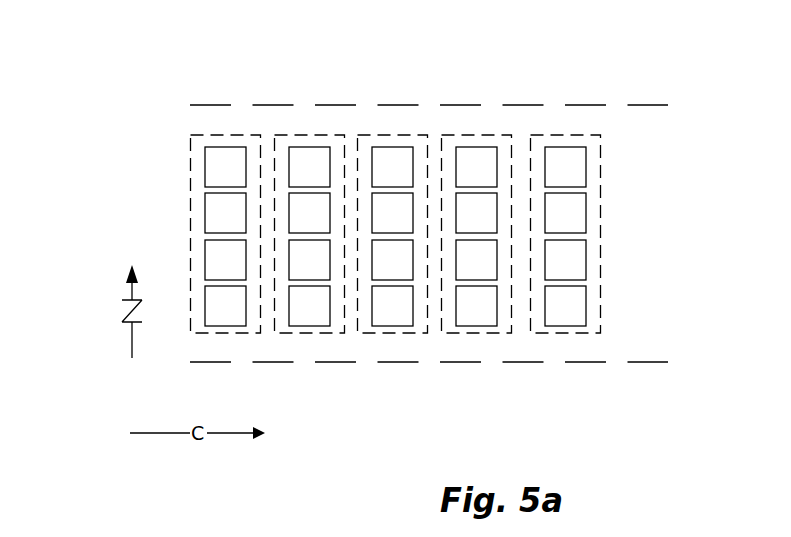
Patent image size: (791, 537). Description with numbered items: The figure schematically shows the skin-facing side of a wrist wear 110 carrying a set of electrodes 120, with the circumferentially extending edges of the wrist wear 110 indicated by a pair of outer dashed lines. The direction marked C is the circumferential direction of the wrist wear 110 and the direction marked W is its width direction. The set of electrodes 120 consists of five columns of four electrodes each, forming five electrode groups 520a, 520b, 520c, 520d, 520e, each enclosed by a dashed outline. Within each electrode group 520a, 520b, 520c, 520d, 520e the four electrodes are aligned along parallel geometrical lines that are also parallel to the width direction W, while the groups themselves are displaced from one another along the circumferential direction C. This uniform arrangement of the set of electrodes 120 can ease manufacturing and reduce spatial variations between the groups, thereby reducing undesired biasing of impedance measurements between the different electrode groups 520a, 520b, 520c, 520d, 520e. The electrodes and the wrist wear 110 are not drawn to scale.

The set of electrodes 120 is at (104, 110).
The wrist wear 110 is at (586, 364).
The first electrode group 520a is at (225, 137).
The second electrode group 520b is at (313, 137).
The third electrode group 520c is at (393, 137).
The fourth electrode group 520d is at (480, 137).
The fifth electrode group 520e is at (567, 137).